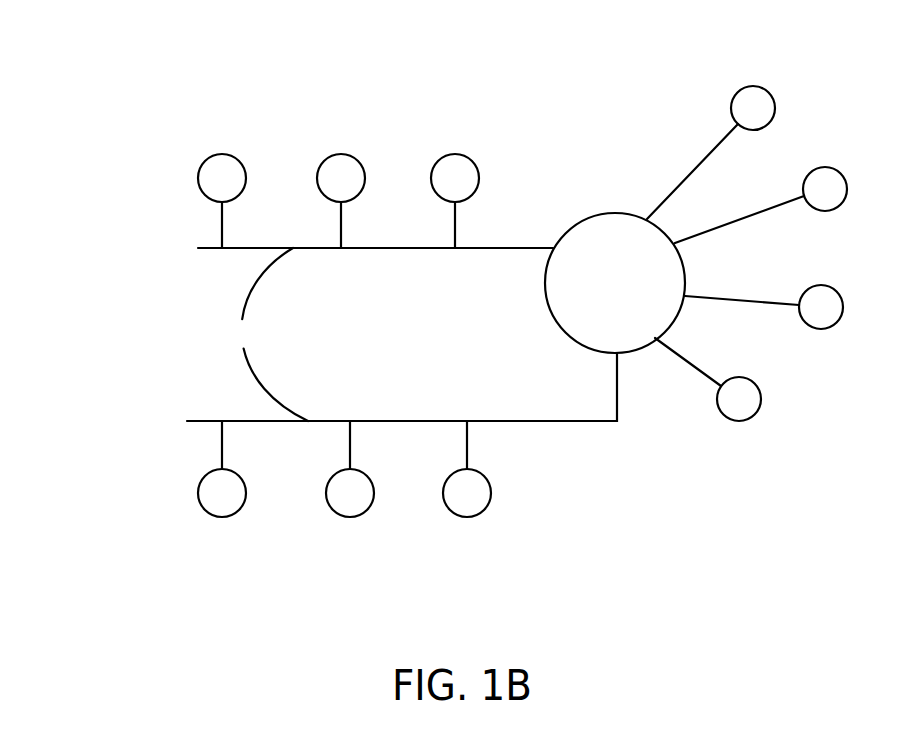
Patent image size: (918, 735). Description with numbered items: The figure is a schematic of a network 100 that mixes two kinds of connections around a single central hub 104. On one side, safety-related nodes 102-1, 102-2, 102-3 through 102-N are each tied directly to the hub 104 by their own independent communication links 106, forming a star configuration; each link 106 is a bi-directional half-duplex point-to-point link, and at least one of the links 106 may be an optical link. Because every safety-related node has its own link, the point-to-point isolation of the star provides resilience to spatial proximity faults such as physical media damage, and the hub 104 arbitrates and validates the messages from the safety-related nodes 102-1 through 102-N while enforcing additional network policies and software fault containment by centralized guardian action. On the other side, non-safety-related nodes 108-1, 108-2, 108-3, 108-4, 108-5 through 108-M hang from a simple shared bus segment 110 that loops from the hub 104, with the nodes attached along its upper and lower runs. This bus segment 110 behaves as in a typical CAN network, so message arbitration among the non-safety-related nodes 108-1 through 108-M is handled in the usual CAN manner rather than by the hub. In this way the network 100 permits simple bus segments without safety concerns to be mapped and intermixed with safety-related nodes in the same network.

The network 100 is at (98, 153).
The safety-related node 102-1 is at (776, 102).
The safety-related node 102-2 is at (847, 186).
The safety-related node 102-3 is at (843, 306).
The safety-related node 102-N is at (761, 397).
The hub 104 is at (545, 290).
The communication link 106 is at (680, 185).
The non-safety-related node 108-1 is at (198, 183).
The non-safety-related node 108-2 is at (317, 183).
The non-safety-related node 108-3 is at (431, 183).
The non-safety-related node 108-4 is at (444, 487).
The non-safety-related node 108-5 is at (327, 487).
The non-safety-related node 108-M is at (199, 487).
The shared bus segment 110 is at (268, 334).